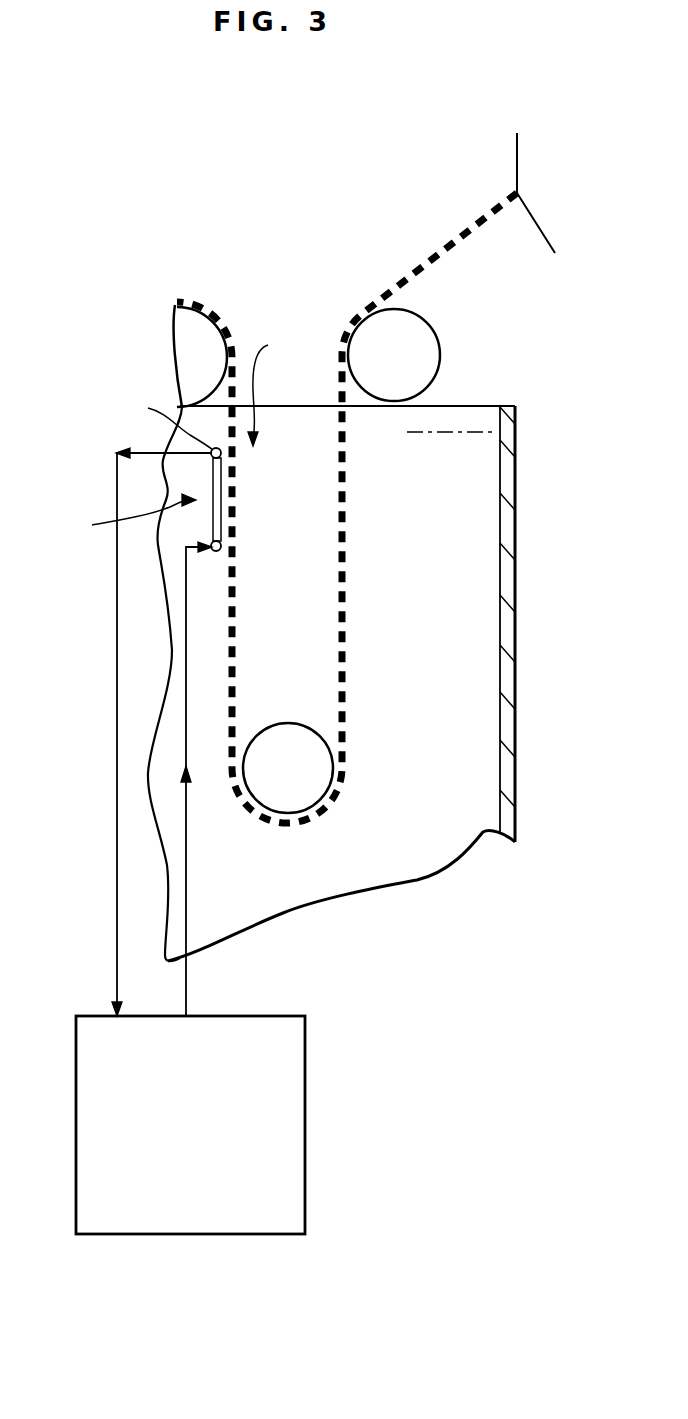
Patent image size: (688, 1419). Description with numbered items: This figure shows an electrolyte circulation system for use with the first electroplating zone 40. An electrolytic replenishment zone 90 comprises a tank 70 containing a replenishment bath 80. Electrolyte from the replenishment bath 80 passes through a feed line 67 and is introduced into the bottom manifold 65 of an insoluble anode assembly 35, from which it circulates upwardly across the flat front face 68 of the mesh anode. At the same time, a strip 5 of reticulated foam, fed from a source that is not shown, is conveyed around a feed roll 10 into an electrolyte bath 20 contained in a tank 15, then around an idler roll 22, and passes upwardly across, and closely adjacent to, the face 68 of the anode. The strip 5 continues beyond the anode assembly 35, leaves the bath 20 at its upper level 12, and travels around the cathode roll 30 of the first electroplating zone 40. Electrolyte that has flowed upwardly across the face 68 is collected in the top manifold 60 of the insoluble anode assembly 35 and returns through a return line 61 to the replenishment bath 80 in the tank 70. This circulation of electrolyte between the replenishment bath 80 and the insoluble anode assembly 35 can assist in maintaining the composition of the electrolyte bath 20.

The strip 5 is at (438, 248).
The feed roll 10 is at (420, 351).
The upper level 12 is at (485, 434).
The tank 15 is at (510, 722).
The electrolyte bath 20 is at (473, 652).
The idler roll 22 is at (292, 750).
The cathode roll 30 is at (172, 338).
The insoluble anode assembly 35 is at (125, 518).
The first electroplating zone 40 is at (276, 387).
The top manifold 60 is at (163, 427).
The return line 61 is at (117, 592).
The bottom manifold 65 is at (212, 551).
The feed line 67 is at (187, 866).
The flat front face 68 is at (213, 523).
The tank 70 is at (135, 1237).
The replenishment bath 80 is at (263, 1115).
The electrolytic replenishment zone 90 is at (52, 1130).